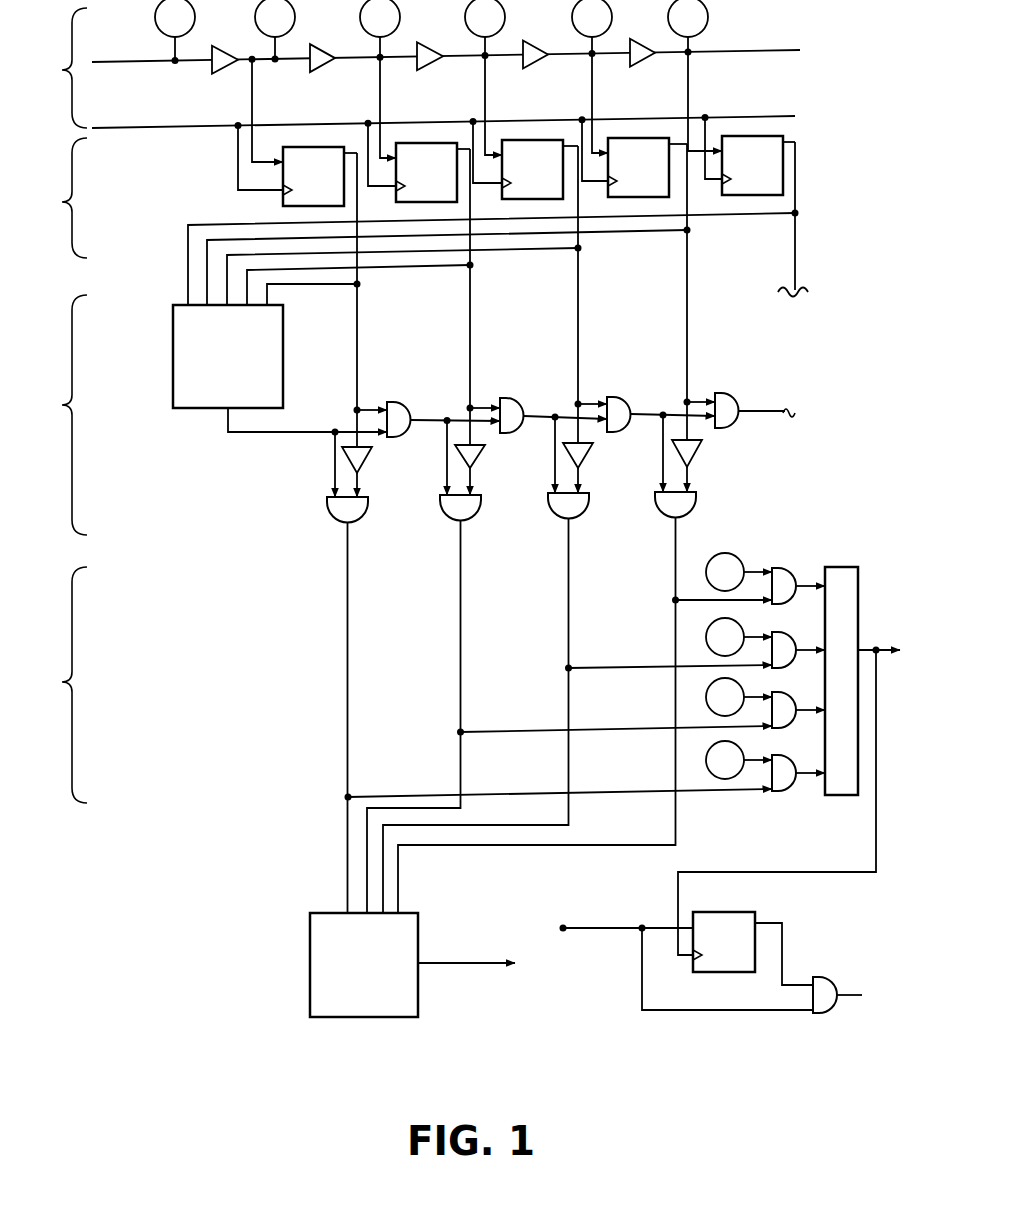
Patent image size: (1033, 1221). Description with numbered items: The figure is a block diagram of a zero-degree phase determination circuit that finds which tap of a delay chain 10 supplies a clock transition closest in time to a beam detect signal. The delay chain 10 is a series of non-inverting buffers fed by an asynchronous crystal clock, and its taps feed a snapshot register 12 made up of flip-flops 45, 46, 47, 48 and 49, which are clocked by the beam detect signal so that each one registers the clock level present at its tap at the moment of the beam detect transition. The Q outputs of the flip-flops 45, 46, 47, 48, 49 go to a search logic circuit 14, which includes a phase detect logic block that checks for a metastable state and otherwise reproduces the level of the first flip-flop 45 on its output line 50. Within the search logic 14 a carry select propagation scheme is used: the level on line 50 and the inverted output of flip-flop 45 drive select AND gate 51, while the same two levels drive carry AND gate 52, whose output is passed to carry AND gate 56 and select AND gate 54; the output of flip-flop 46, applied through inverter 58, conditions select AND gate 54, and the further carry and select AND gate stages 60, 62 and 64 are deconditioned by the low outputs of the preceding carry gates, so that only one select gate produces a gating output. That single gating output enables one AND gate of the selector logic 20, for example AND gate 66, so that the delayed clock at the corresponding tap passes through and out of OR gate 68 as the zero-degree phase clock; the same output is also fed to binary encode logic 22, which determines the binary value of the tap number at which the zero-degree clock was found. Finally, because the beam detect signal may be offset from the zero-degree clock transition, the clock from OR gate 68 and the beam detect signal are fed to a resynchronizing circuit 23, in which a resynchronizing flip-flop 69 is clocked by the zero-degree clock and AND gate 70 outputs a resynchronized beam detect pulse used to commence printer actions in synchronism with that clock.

The delay chain 10 is at (61, 70).
The snapshot register 12 is at (61, 202).
The search logic circuit 14 is at (61, 405).
The selector logic 20 is at (61, 682).
The binary encode logic module 22 is at (310, 962).
The resynchronizing circuit 23 is at (718, 866).
The flip-flop 45 is at (283, 202).
The flip-flop 46 is at (396, 199).
The flip-flop 47 is at (503, 195).
The flip-flop 48 is at (652, 199).
The flip-flop 49 is at (748, 197).
The line 50 is at (277, 438).
The select AND gate 51 is at (350, 521).
The carry AND gate 52 is at (397, 400).
The select AND gate 54 is at (466, 519).
The carry AND gate 56 is at (509, 396).
The inverter 58 is at (578, 517).
The AND gate 60 is at (617, 395).
The AND gate 62 is at (686, 516).
The AND gate 64 is at (727, 392).
The AND gate 66 is at (798, 713).
The OR gate 68 is at (848, 565).
The beam detect resynchronizing flip-flop 69 is at (722, 914).
The AND gate 70 is at (835, 978).